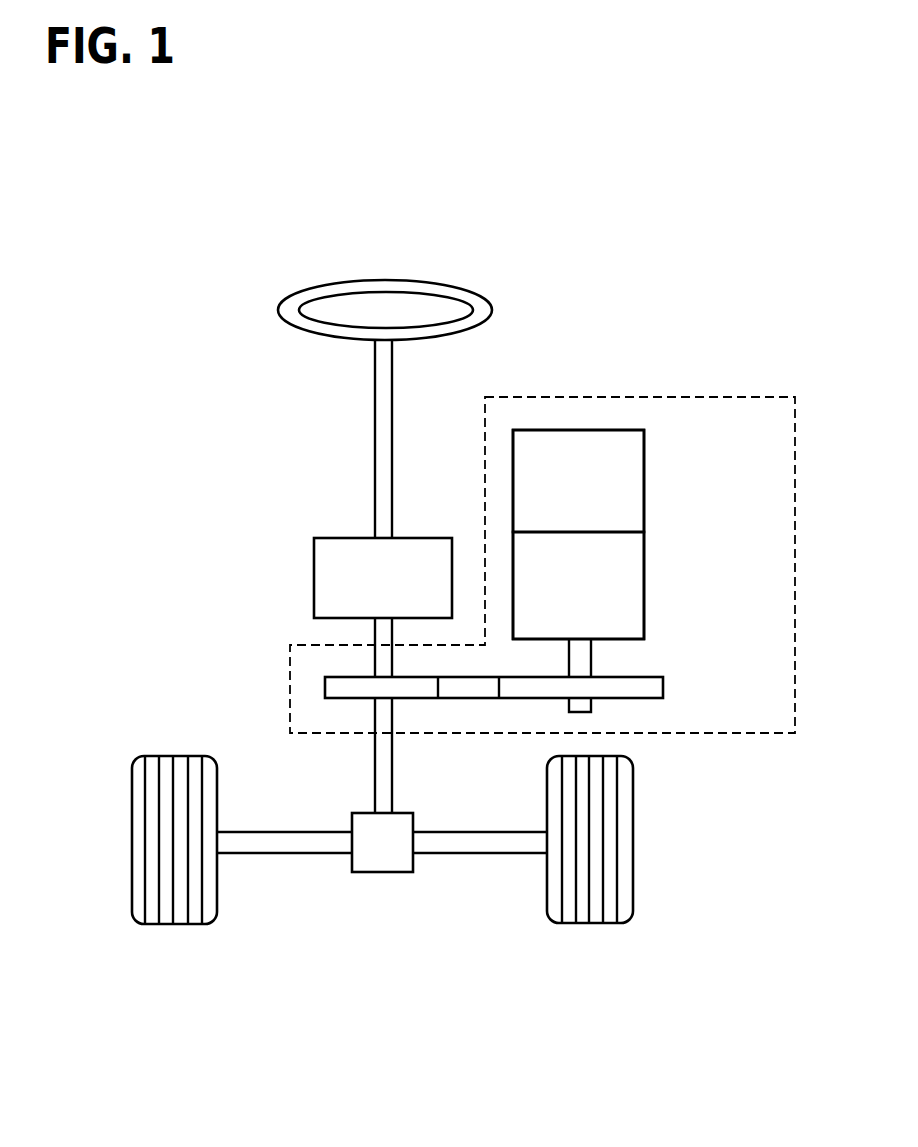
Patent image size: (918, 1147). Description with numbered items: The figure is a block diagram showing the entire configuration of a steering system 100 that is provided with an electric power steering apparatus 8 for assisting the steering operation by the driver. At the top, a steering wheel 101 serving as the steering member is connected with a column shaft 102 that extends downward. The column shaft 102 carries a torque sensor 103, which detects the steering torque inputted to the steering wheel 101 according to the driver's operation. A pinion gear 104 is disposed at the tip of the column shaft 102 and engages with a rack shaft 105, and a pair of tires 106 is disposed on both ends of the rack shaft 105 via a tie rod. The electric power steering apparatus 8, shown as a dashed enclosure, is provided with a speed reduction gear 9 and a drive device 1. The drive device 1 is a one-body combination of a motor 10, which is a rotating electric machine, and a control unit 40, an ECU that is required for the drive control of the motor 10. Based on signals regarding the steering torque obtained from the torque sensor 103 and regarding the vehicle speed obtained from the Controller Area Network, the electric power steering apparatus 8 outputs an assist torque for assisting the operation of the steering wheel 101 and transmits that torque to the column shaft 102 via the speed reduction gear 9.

The steering system 100 is at (343, 1000).
The steering wheel 101 is at (278, 310).
The column shaft 102 is at (374, 400).
The torque sensor 103 is at (314, 575).
The pinion gear 104 is at (372, 872).
The rack shaft 105 is at (277, 853).
The tire 106 is at (190, 924).
The electric power steering apparatus 8 is at (750, 395).
The drive device 1 is at (646, 456).
The control unit 40 is at (645, 497).
The motor 10 is at (644, 560).
The speed reduction gear 9 is at (663, 690).